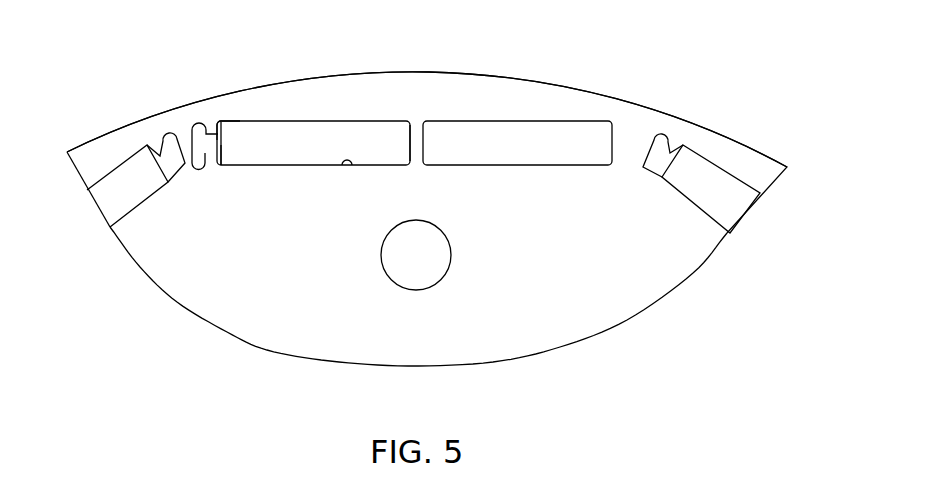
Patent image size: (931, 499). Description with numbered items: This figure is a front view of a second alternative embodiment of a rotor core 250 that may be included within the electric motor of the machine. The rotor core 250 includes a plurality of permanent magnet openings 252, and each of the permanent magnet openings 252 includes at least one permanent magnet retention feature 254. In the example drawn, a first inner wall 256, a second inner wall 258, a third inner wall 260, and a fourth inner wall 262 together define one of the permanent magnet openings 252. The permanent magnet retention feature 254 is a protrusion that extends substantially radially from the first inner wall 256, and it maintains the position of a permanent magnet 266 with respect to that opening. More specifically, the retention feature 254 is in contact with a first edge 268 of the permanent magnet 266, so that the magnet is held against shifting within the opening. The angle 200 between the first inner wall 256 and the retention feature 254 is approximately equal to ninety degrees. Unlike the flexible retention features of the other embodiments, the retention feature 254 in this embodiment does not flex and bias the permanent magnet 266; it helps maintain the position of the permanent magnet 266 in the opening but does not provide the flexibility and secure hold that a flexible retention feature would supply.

The angle 200 is at (238, 133).
The rotor core 250 is at (653, 108).
The permanent magnet openings 252 is at (98, 138).
The permanent magnet retention feature 254 is at (214, 138).
The first inner wall 256 is at (343, 120).
The second inner wall 258 is at (407, 128).
The third inner wall 260 is at (349, 164).
The fourth inner wall 262 is at (203, 165).
The permanent magnet 266 is at (222, 150).
The first edge 268 is at (200, 124).